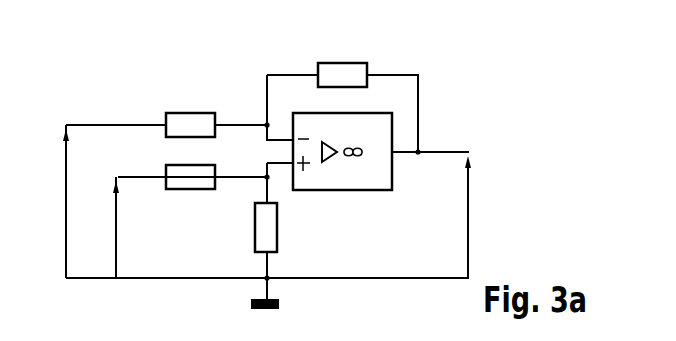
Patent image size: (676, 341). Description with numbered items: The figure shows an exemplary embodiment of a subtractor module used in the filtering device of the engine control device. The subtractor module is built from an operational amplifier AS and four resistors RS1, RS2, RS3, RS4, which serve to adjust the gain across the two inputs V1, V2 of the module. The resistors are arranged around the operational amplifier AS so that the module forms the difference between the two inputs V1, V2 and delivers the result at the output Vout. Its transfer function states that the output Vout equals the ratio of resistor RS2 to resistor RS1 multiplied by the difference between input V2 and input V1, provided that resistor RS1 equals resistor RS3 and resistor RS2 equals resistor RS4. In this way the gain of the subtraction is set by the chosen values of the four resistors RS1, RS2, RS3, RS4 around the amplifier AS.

The resistor RS1 is at (181, 113).
The resistor RS2 is at (332, 63).
The resistor RS3 is at (181, 189).
The resistor RS4 is at (277, 237).
The operational amplifier AS is at (345, 190).
The input V1 is at (50, 174).
The input V2 is at (131, 212).
The output Vout is at (443, 192).